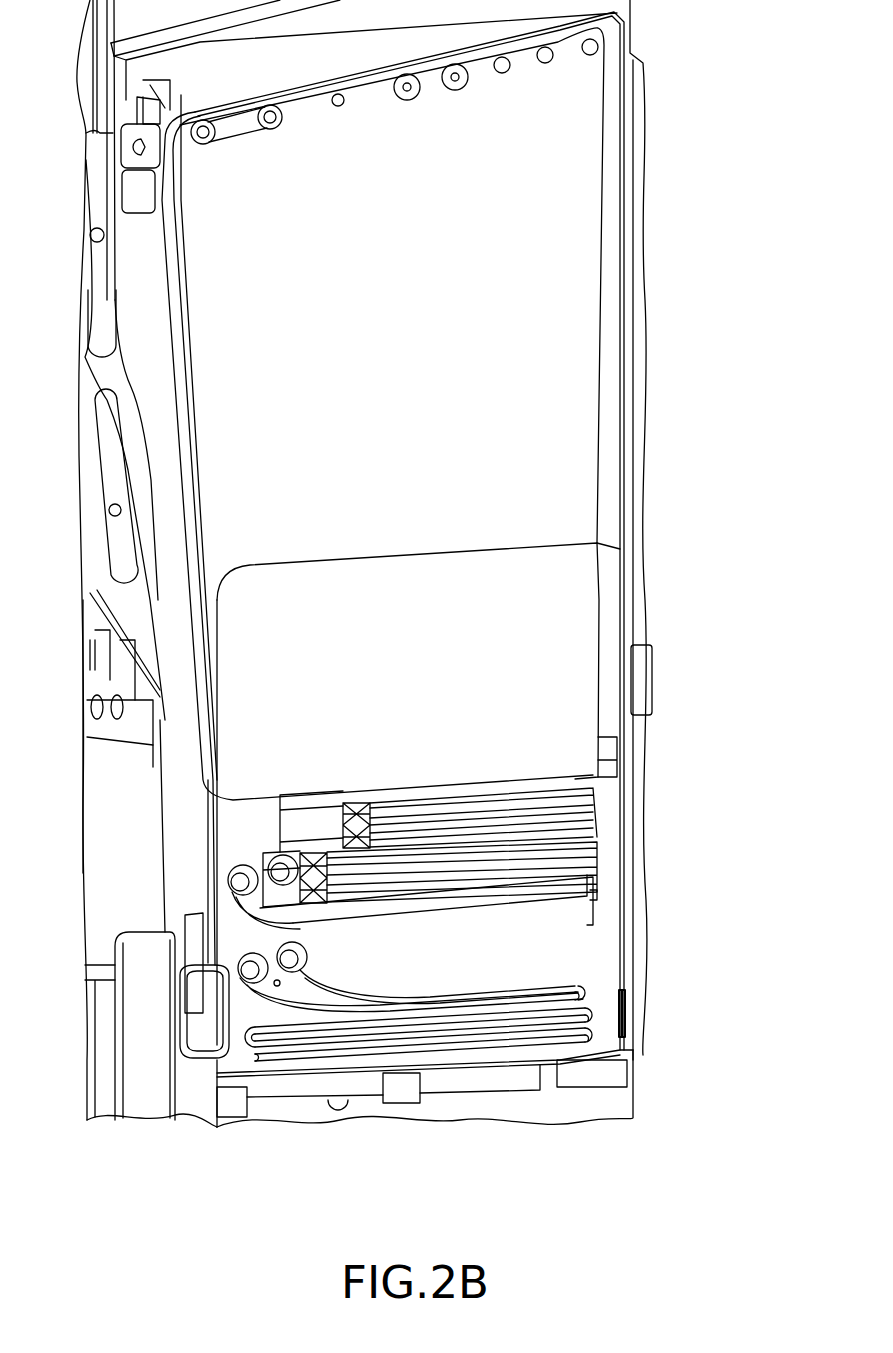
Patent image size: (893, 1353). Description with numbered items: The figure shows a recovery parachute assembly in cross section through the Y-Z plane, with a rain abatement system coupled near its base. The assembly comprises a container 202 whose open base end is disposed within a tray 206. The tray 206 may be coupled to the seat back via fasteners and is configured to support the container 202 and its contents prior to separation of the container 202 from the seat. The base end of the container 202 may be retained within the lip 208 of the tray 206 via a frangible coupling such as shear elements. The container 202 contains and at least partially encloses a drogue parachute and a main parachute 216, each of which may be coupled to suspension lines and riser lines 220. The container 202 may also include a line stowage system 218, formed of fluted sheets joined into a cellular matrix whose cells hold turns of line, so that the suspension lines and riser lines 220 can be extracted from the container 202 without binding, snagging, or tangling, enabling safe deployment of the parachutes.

The container 202 is at (628, 176).
The tray 206 is at (508, 1100).
The lip 208 is at (632, 1028).
The main parachute 216 is at (401, 323).
The line stowage system 218 is at (570, 838).
The riser lines 220 is at (575, 1005).